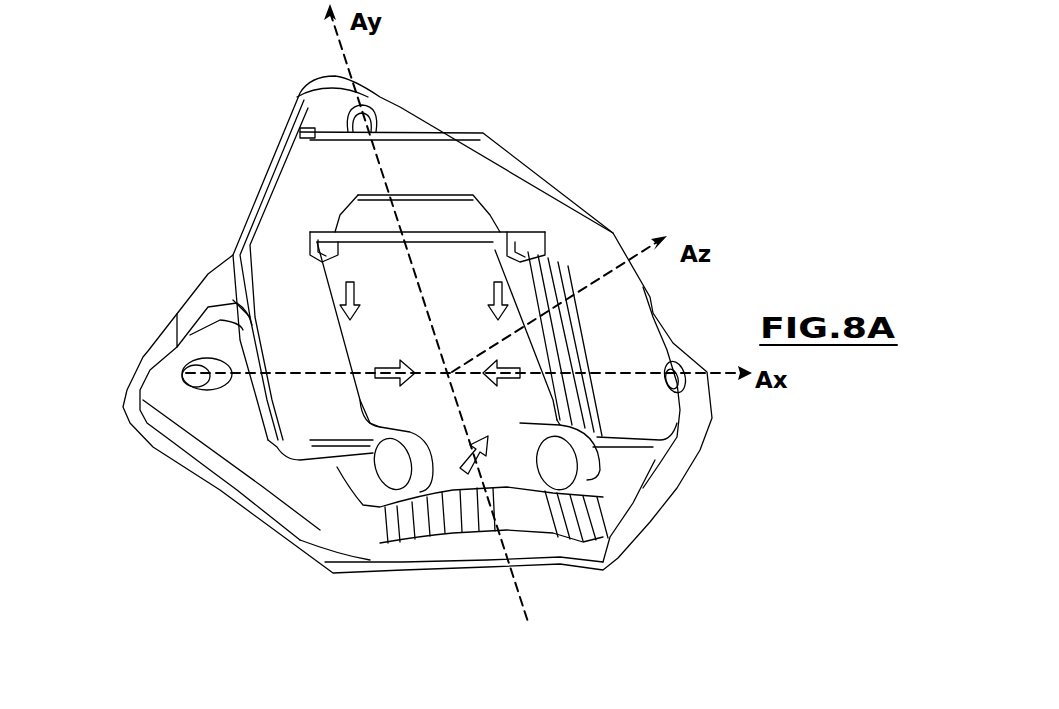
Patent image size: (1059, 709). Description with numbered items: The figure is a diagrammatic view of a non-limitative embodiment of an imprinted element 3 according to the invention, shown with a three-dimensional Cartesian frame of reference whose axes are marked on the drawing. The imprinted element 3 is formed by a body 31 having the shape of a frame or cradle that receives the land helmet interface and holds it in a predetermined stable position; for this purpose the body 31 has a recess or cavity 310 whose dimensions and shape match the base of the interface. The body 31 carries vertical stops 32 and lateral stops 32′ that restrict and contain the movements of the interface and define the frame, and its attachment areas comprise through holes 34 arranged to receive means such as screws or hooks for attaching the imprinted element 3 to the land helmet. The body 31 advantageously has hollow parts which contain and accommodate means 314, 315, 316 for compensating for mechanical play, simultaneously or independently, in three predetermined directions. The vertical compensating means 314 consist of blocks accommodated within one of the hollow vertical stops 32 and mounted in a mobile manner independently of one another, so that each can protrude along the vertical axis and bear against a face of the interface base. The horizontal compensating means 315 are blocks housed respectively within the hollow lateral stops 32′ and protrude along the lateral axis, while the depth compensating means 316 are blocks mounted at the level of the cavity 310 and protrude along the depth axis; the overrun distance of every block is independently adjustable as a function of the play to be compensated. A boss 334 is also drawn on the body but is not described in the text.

The imprinted element 3 is at (228, 126).
The body 31 is at (237, 417).
The cavity 310 is at (453, 425).
The vertical compensating means 314 is at (322, 248).
The horizontal compensating means 315 is at (553, 308).
The depth compensating means 316 is at (397, 470).
The vertical stop 32 is at (445, 222).
The lateral stop 32′ is at (338, 400).
The boss 334 is at (373, 127).
The through hole 34 is at (210, 373).